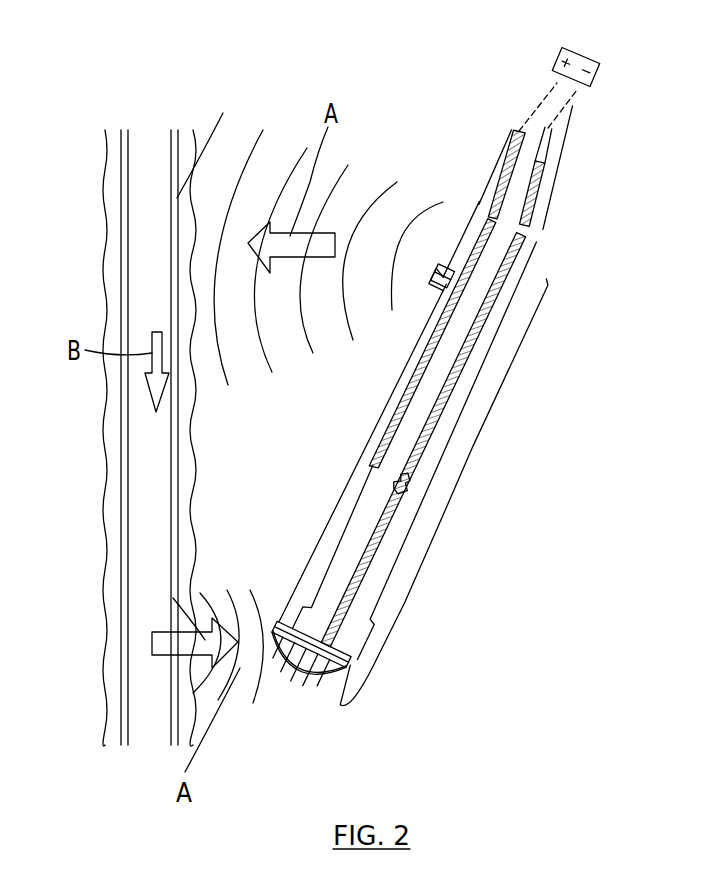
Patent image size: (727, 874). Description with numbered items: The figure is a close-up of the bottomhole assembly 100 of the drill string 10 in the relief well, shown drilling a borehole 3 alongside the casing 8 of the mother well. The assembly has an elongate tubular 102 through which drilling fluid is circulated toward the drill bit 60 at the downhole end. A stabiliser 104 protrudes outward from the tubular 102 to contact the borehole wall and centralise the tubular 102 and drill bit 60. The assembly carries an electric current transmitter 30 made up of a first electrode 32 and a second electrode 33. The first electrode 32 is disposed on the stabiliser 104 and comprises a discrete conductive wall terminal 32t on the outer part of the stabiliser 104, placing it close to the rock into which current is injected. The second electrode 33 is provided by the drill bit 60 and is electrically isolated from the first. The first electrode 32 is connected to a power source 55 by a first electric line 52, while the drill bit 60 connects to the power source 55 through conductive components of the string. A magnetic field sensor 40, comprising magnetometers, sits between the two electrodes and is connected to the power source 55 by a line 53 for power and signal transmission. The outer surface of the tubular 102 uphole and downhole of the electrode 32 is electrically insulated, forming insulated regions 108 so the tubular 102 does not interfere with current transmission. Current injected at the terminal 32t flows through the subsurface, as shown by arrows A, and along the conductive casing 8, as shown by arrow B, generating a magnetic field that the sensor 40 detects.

The bottomhole assembly 100 is at (605, 322).
The drill string 10 is at (575, 144).
The power source 55 is at (601, 58).
The first electric line 52 is at (524, 126).
The electrically insulated regions 108 is at (507, 167).
The elongate tubular 102 is at (556, 168).
The line 53 is at (548, 278).
The electric current transmitter 30 is at (466, 473).
The borehole 3 is at (373, 655).
The stabiliser 104 is at (463, 222).
The first electrode 32 is at (447, 282).
The conductive wall terminal 32t is at (442, 276).
The magnetic field sensor 40 is at (407, 490).
The drill bit 60 is at (308, 687).
The second electrode 33 is at (305, 658).
The casing 8 is at (172, 185).